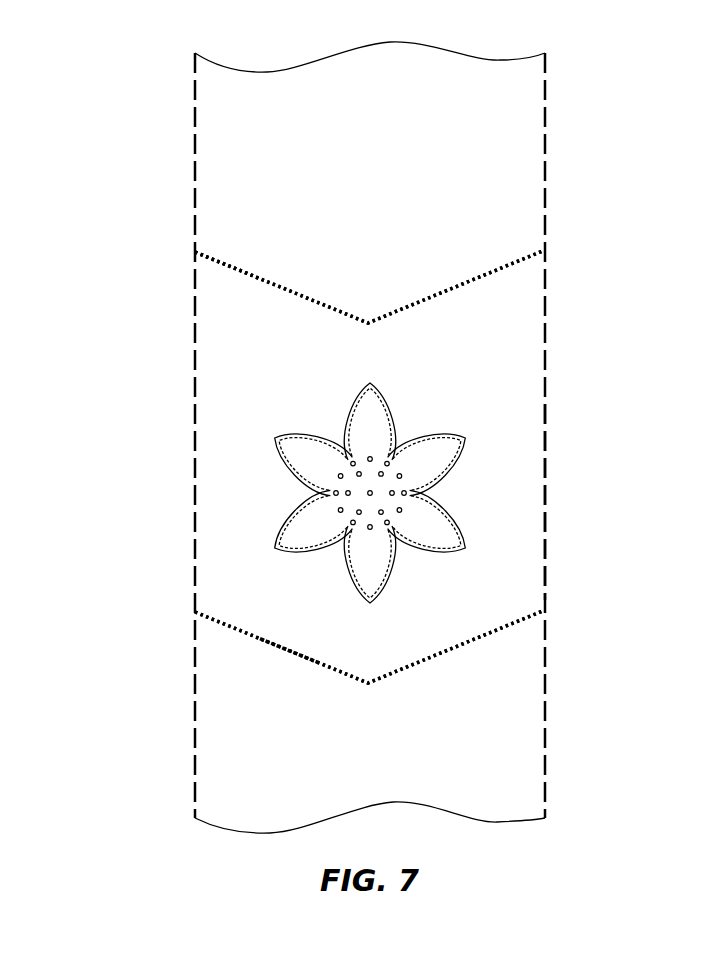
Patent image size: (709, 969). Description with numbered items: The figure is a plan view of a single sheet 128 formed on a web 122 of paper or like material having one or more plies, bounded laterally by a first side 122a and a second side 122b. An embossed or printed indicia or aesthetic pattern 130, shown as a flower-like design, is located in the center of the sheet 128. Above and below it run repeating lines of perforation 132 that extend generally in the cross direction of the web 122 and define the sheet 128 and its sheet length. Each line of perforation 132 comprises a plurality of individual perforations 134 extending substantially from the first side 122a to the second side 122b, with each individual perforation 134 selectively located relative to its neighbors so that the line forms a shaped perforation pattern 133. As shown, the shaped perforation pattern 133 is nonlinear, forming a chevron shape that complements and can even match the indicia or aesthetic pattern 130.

The web 122 is at (518, 170).
The first side 122a is at (546, 563).
The second side 122b is at (195, 480).
The single sheet 128 is at (549, 488).
The indicia or aesthetic pattern 130 is at (472, 437).
The repeating lines of perforation 132 is at (282, 288).
The shaped perforation pattern 133 is at (239, 262).
The individual perforations 134 is at (318, 300).